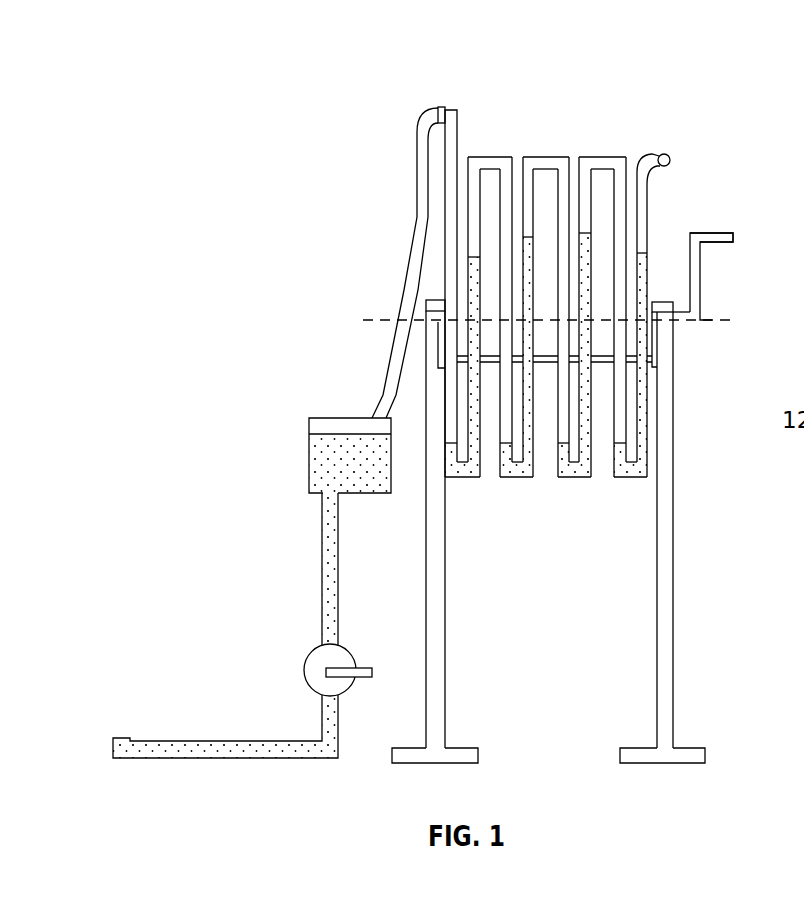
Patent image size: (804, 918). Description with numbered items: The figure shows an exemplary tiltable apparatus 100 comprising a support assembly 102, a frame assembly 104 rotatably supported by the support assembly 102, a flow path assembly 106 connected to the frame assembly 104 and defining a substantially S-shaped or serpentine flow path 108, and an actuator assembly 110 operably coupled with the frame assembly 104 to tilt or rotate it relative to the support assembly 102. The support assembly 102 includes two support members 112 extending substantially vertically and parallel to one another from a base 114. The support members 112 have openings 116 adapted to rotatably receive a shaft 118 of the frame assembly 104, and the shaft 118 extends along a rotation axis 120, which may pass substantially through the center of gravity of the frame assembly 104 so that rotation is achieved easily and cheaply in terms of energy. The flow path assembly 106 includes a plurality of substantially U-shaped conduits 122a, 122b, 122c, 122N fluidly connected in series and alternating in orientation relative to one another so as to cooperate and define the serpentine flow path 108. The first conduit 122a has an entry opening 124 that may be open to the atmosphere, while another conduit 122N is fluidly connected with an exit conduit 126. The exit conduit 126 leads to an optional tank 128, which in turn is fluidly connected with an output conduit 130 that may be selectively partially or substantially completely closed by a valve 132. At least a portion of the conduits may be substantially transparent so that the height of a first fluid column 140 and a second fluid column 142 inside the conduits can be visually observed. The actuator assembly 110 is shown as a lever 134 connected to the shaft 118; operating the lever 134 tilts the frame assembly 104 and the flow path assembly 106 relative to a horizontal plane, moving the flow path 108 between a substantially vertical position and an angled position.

The apparatus 100 is at (386, 84).
The support assembly 102 is at (688, 717).
The frame assembly 104 is at (545, 362).
The flow path assembly 106 is at (545, 156).
The flow path 108 is at (538, 158).
The actuator assembly 110 is at (702, 255).
The support members 112 is at (668, 322).
The base 114 is at (462, 748).
The openings 116 is at (437, 313).
The shaft 118 is at (686, 310).
The rotation axis 120 is at (385, 318).
The conduit 122N is at (446, 107).
The conduit 122a is at (622, 134).
The conduit 122b is at (572, 478).
The conduit 122c is at (462, 478).
The entry opening 124 is at (670, 156).
The exit conduit 126 is at (384, 394).
The tank 128 is at (309, 468).
The output conduit 130 is at (322, 598).
The valve 132 is at (348, 652).
The lever 134 is at (722, 233).
The first fluid column 140 is at (642, 200).
The second fluid column 142 is at (648, 410).